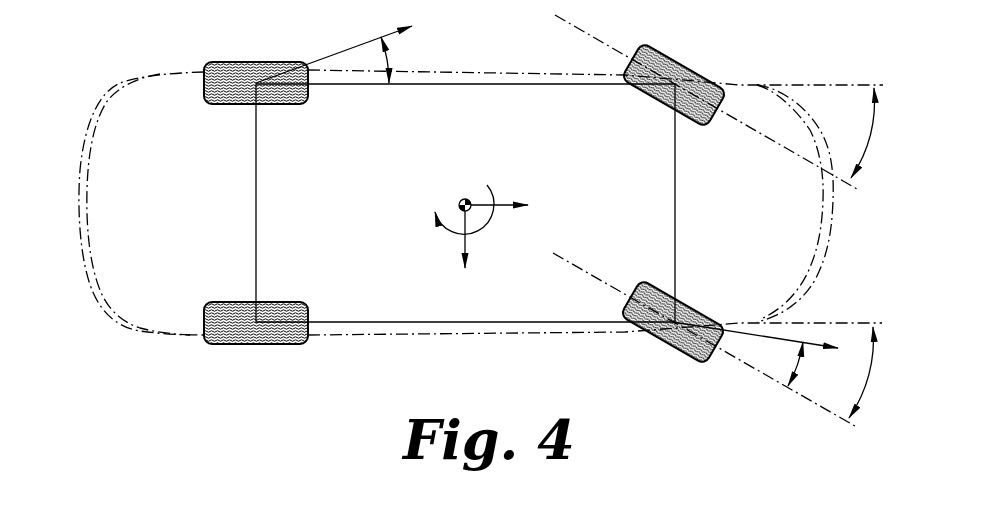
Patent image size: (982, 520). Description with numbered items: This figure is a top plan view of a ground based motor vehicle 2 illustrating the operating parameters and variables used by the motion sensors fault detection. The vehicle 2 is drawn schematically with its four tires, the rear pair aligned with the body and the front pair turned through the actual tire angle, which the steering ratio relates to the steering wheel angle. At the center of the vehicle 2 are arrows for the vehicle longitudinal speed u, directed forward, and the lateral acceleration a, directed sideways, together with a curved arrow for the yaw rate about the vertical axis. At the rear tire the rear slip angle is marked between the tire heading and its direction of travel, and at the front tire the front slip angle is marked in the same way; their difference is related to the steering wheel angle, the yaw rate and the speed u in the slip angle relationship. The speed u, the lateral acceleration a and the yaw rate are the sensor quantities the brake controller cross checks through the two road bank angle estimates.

The motor vehicle 2 is at (305, 382).
The vehicle longitudinal speed u is at (511, 205).
The lateral acceleration a is at (464, 254).